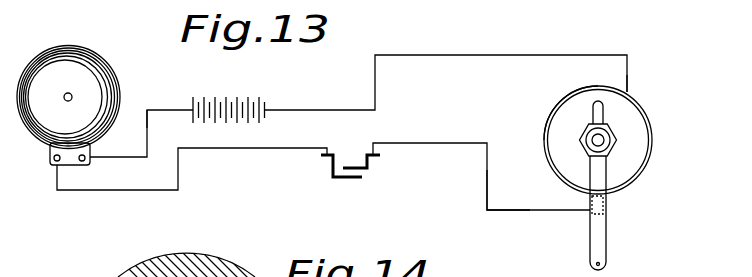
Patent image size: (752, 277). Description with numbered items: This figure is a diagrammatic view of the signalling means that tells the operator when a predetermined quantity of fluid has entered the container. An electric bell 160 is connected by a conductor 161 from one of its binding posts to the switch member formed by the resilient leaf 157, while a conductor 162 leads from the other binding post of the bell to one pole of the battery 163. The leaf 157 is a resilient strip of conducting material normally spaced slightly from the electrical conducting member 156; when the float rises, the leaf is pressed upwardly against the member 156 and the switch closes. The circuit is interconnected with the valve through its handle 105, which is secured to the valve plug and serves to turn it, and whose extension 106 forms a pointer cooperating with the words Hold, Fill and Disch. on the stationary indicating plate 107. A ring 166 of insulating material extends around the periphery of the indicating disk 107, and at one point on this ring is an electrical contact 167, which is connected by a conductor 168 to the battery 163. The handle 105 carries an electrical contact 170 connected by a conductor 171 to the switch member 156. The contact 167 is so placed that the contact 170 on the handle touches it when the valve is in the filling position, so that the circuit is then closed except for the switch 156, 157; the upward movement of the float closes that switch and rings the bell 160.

The electric bell 160 is at (86, 66).
The conductor 161 is at (107, 193).
The conductor 162 is at (161, 108).
The battery 163 is at (240, 103).
The conductor 168 is at (338, 100).
The resilient leaf 157 is at (342, 180).
The electrical conducting member 156 is at (362, 170).
The conductor 171 is at (487, 197).
The indicating plate 107 is at (640, 130).
The electrical contact 167 is at (633, 97).
The ring of insulating material 166 is at (547, 122).
The extension 106 is at (594, 107).
The handle 105 is at (607, 247).
The electrical contact 170 is at (605, 208).